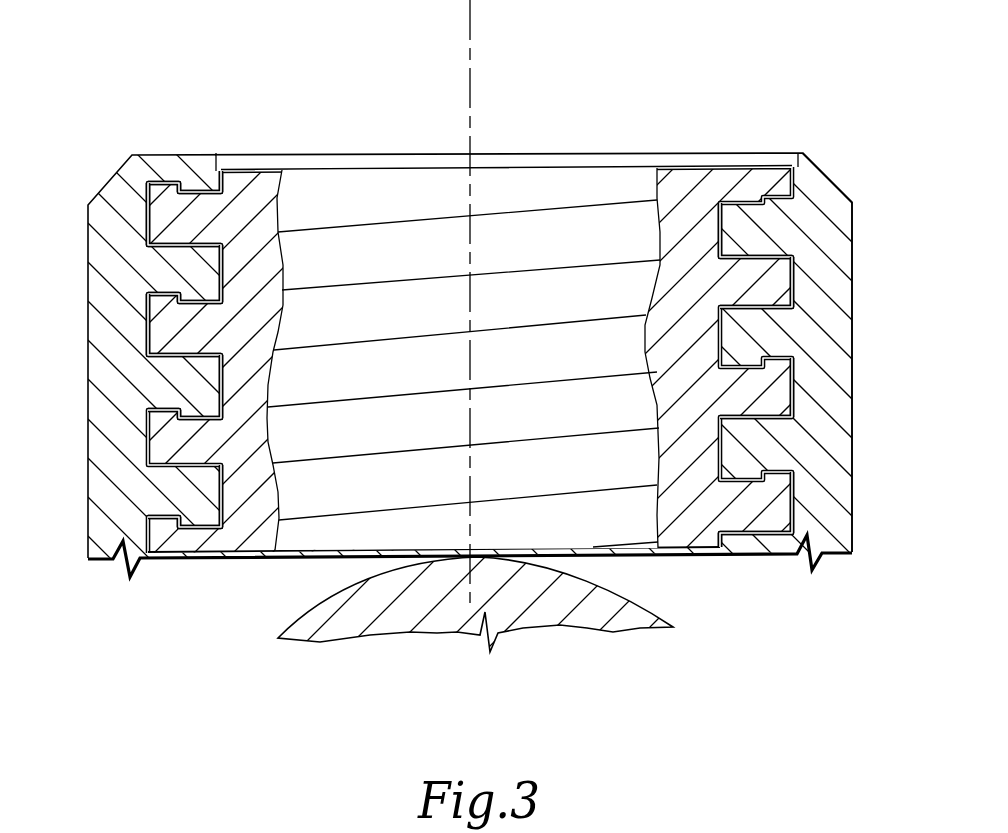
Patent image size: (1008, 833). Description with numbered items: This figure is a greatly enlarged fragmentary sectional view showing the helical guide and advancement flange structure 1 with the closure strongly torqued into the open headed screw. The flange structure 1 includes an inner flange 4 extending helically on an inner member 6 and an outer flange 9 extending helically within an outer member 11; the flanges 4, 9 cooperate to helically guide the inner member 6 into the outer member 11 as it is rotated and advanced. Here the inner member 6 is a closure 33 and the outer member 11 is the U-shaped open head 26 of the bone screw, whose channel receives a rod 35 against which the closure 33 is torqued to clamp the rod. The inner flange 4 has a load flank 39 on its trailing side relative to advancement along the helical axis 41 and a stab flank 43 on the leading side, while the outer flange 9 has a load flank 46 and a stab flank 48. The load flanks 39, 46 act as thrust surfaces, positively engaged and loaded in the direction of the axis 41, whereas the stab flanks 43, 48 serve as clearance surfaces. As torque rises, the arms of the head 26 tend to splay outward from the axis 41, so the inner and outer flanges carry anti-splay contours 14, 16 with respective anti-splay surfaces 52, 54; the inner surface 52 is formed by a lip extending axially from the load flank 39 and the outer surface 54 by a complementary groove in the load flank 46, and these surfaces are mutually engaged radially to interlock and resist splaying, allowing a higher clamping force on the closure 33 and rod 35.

The helical guide and advancement flange structure 1 is at (812, 224).
The inner flange 4 is at (160, 220).
The inner member 6 is at (433, 180).
The outer flange 9 is at (212, 277).
The outer member 11 is at (115, 371).
The inner anti-splay contour 14 is at (183, 190).
The outer anti-splay contour 16 is at (180, 305).
The open head 26 is at (840, 458).
The closure 33 is at (689, 180).
The rod 35 is at (650, 604).
The load flank 39 is at (197, 412).
The helical axis 41 is at (470, 42).
The stab flank 43 is at (183, 467).
The load flank 46 is at (730, 397).
The stab flank 48 is at (757, 303).
The inner anti-splay surface 52 is at (740, 260).
The outer anti-splay surface 54 is at (755, 508).